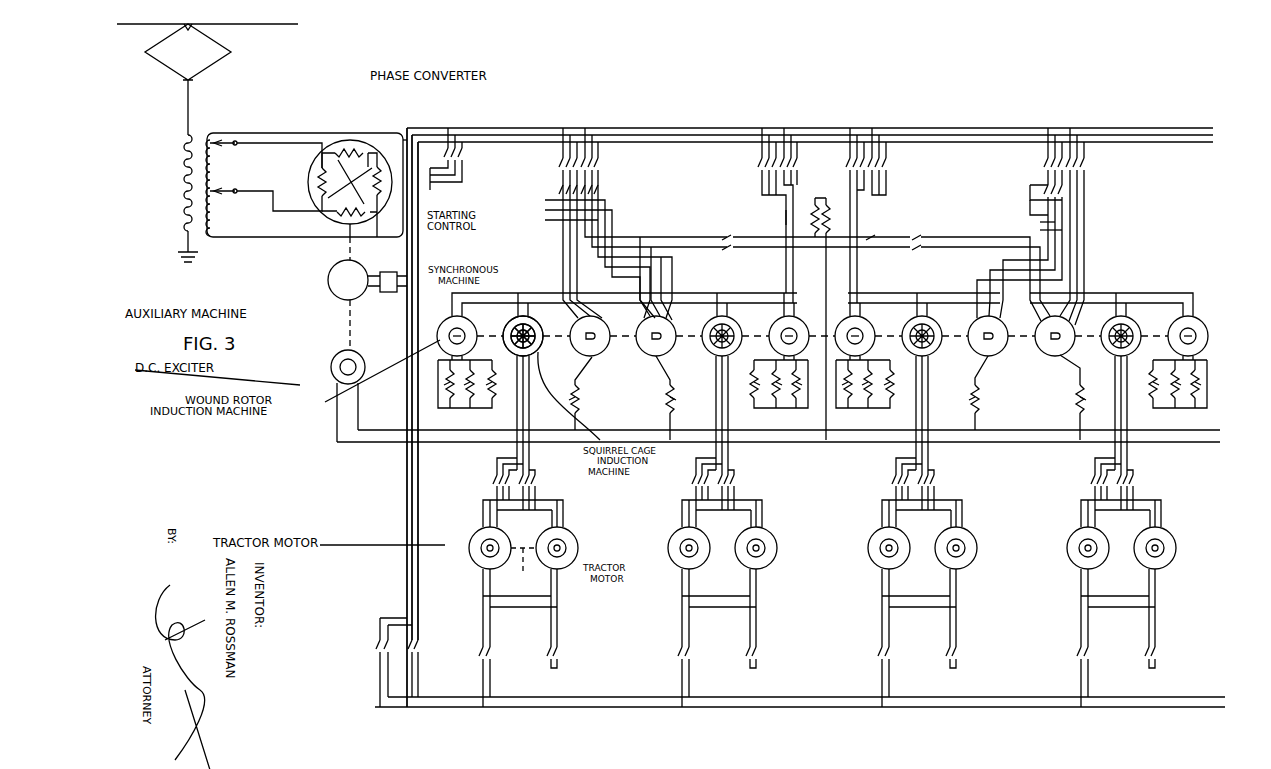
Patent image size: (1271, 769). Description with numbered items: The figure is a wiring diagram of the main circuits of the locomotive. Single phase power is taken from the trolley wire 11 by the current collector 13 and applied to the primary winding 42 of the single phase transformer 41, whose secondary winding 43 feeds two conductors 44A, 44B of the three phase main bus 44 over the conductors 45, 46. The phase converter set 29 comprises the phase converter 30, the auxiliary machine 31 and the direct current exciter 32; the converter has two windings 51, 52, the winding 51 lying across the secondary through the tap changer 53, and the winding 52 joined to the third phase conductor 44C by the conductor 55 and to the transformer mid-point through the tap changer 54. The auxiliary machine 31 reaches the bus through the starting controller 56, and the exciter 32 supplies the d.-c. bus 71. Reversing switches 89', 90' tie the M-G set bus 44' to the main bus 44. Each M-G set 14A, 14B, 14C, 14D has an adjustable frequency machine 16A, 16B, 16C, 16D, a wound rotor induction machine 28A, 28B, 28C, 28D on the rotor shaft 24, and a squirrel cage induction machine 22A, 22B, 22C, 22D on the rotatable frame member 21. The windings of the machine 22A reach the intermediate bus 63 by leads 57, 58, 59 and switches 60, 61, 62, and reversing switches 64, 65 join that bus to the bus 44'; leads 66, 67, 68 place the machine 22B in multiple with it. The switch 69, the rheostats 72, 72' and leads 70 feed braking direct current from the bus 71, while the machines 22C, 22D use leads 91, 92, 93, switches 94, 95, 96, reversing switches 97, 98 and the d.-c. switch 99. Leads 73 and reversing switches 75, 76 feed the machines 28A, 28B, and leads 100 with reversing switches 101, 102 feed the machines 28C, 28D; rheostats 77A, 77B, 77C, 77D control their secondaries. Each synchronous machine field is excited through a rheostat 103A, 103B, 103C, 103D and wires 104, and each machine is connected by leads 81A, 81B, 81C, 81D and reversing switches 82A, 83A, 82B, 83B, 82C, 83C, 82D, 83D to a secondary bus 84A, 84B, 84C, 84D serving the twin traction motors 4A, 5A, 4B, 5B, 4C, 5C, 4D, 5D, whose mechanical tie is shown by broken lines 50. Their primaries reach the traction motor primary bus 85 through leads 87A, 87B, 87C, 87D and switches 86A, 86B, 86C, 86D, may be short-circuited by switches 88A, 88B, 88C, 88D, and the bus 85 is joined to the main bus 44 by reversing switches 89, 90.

The trolley wire 11 is at (250, 26).
The current collector 13 is at (188, 52).
The single phase transformer 41 is at (175, 104).
The primary winding 42 is at (185, 176).
The secondary winding 43 is at (205, 205).
The conductor 45 is at (248, 132).
The conductor 46 is at (250, 236).
The tap changer 53 is at (228, 146).
The adjustable voltage tap changer 54 is at (228, 194).
The winding 51 is at (318, 175).
The winding 52 is at (330, 216).
The phase converter 30 is at (348, 140).
The conductor 55 is at (392, 130).
The reversing switch 90' is at (447, 141).
The reversing switch 89' is at (447, 191).
The M-G set bus 44' is at (810, 120).
The phase converter set 29 is at (295, 262).
The auxiliary machine 31 is at (333, 292).
The starting controller 56 is at (386, 292).
The direct current exciter 32 is at (333, 372).
The main bus 44 is at (393, 417).
The conductor 44A is at (405, 480).
The conductor 44B is at (410, 500).
The third phase conductor 44C is at (416, 518).
The d.-c. bus 71 is at (812, 442).
The reversing switch 64 is at (560, 160).
The reversing switch 65 is at (602, 162).
The switch 60 is at (560, 186).
The switch 61 is at (603, 190).
The switch 62 is at (600, 210).
The intermediate bus 63 is at (590, 180).
The leads 57 is at (545, 207).
The leads 58 is at (545, 217).
The leads 59 is at (545, 230).
The leads 66 is at (632, 260).
The leads 67 is at (648, 260).
The leads 68 is at (672, 245).
The switch 69 is at (728, 235).
The d.-c. switch 99 is at (918, 236).
The leads 100 is at (855, 240).
The adjustable rheostat 72 is at (815, 212).
The adjustable rheostat 72' is at (835, 217).
The leads 70 is at (826, 280).
The leads 73 is at (786, 217).
The reversing switch 76 is at (760, 163).
The reversing switch 75 is at (800, 164).
The reversing switch 101 is at (848, 165).
The reversing switch 102 is at (888, 164).
The reversing switch 97 is at (1045, 160).
The reversing switch 98 is at (1088, 164).
The speed control switch 94 is at (1028, 190).
The speed control switch 95 is at (1060, 193).
The speed control switch 96 is at (1066, 198).
The leads 91 is at (1030, 214).
The leads 92 is at (1056, 222).
The leads 93 is at (1064, 232).
The M-G set 14A is at (537, 300).
The M-G set 14B is at (748, 300).
The M-G set 14C is at (888, 300).
The M-G set 14D is at (1160, 298).
The rotatable frame member 21 is at (822, 322).
The wound rotor induction machine 28A is at (445, 332).
The rotor shaft 24 is at (510, 331).
The adjustable frequency machine 16A is at (488, 282).
The squirrel cage induction machine 22A is at (596, 352).
The squirrel cage induction machine 22B is at (652, 352).
The adjustable frequency machine 16B is at (723, 314).
The wound rotor induction machine 28B is at (770, 344).
The wound rotor induction machine 28C is at (874, 346).
The adjustable frequency machine 16C is at (923, 314).
The squirrel cage induction machine 22C is at (996, 358).
The squirrel cage induction machine 22D is at (1052, 356).
The adjustable frequency machine 16D is at (1123, 314).
The wound rotor induction machine 28D is at (1210, 332).
The control rheostat 77A is at (460, 405).
The control rheostat 77B is at (768, 406).
The adjustable rheostat 77C is at (880, 407).
The adjustable rheostat 77D is at (1200, 400).
The wires 104 is at (562, 380).
The adjustable rheostat 103A is at (580, 400).
The adjustable rheostat 103B is at (668, 400).
The adjustable rheostat 103C is at (980, 398).
The adjustable rheostat 103D is at (1073, 398).
The leads 81A is at (536, 455).
The reversing switch 82A is at (495, 484).
The reversing switch 83A is at (537, 484).
The secondary bus 84A is at (555, 504).
The traction motor 4A is at (470, 546).
The traction motor 5A is at (578, 540).
The broken lines 50 is at (523, 568).
The leads 87A is at (490, 616).
The switch 86A is at (494, 652).
The switch 88A is at (562, 650).
The leads 81B is at (735, 452).
The reversing switch 82B is at (694, 484).
The reversing switch 83B is at (736, 484).
The secondary bus 84B is at (722, 513).
The traction motor 4B is at (672, 540).
The traction motor 5B is at (775, 538).
The leads 87B is at (689, 616).
The switch 86B is at (693, 652).
The switch 88B is at (762, 650).
The leads 81C is at (935, 457).
The reversing switch 82C is at (894, 484).
The reversing switch 83C is at (936, 484).
The secondary bus 84C is at (922, 513).
The traction motor 4C is at (872, 540).
The traction motor 5C is at (975, 538).
The leads 87C is at (889, 616).
The switch 86C is at (893, 652).
The switch 88C is at (962, 650).
The leads 81D is at (1134, 449).
The reversing switch 82D is at (1093, 484).
The reversing switch 83D is at (1135, 484).
The secondary bus 84D is at (1121, 513).
The traction motor 4D is at (1070, 540).
The traction motor 5D is at (1175, 538).
The leads 87D is at (1088, 616).
The switch 86D is at (1092, 652).
The switch 88D is at (1161, 650).
The traction motor primary bus 85 is at (615, 702).
The reversing switch 89 is at (371, 662).
The reversing switch 90 is at (429, 668).